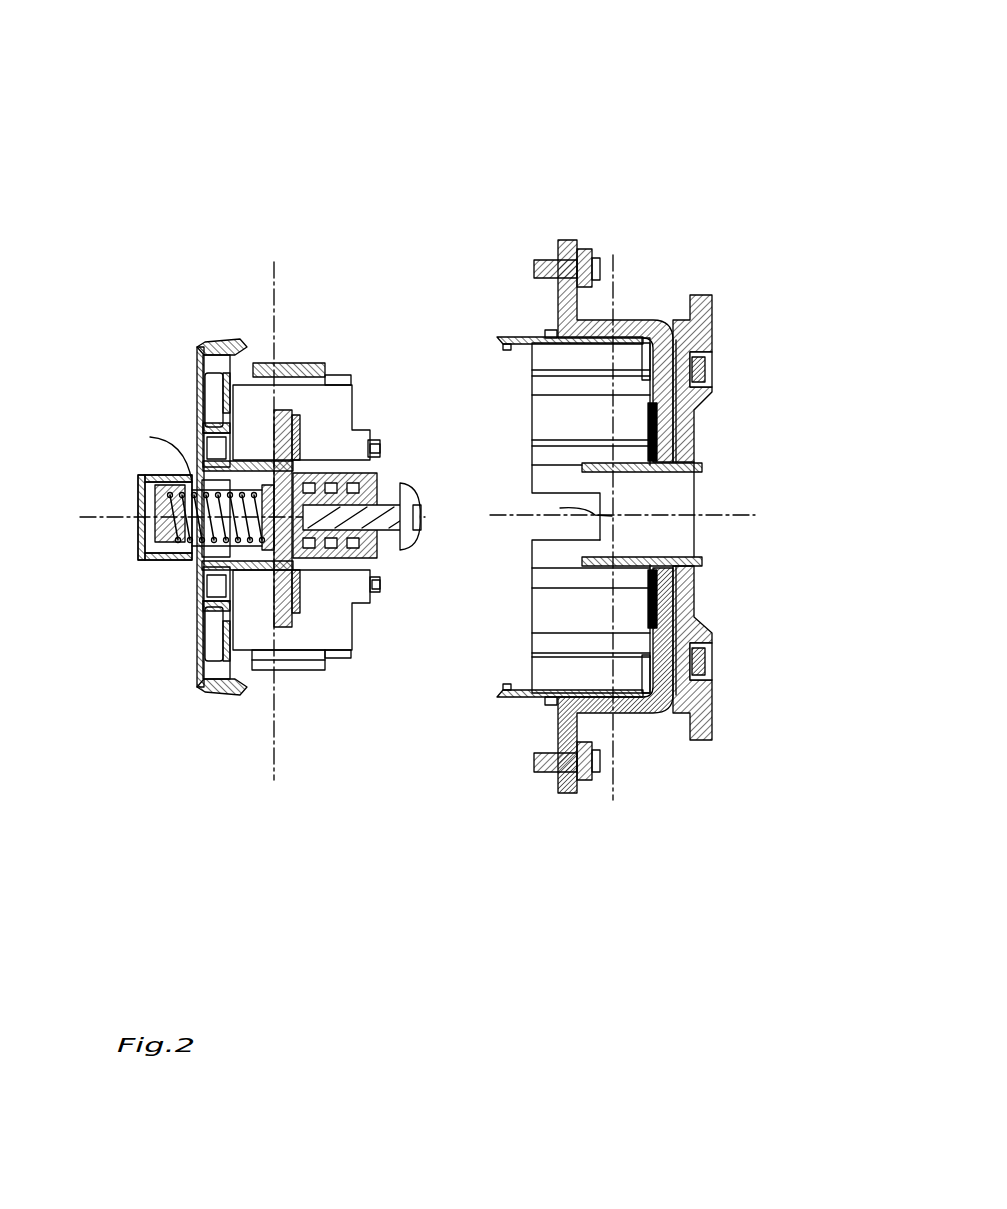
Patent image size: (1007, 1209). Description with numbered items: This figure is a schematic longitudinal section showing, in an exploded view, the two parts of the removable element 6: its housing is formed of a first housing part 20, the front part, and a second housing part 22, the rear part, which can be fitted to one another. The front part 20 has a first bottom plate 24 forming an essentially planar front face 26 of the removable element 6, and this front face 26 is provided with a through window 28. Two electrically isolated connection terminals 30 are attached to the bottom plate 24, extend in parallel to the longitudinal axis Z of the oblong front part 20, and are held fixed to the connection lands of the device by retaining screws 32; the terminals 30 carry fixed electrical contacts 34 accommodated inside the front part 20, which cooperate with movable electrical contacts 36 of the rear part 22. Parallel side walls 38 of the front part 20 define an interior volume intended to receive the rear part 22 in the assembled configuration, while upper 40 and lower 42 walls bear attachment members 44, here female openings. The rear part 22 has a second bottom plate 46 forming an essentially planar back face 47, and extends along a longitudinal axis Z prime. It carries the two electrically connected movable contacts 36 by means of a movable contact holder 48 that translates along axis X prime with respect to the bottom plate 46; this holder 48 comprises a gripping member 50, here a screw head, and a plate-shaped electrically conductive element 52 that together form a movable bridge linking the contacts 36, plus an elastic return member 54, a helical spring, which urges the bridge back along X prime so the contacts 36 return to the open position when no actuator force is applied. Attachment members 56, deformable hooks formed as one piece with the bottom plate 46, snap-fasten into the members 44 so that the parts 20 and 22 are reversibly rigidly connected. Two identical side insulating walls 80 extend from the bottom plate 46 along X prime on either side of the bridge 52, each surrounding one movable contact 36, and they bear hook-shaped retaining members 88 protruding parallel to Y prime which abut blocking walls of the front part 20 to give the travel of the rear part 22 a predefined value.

The removable element 6 is at (377, 31).
The first housing part 20 is at (480, 185).
The second housing part 22 is at (197, 226).
The first bottom plate 24 is at (714, 398).
The front face 26 is at (733, 417).
The through window 28 is at (708, 538).
The connection terminals 30 is at (628, 314).
The retaining screws 32 is at (543, 258).
The fixed electrical contacts 34 is at (703, 480).
The movable electrical contacts 36 is at (300, 430).
The side walls 38 is at (550, 625).
The upper wall 40 is at (522, 338).
The lower wall 42 is at (540, 705).
The attachment members 44 is at (530, 336).
The second bottom plate 46 is at (215, 620).
The back face 47 is at (125, 540).
The movable contact holder 48 is at (340, 455).
The gripping member 50 is at (412, 530).
The electrically conductive element 52 is at (200, 400).
The elastic return member 54 is at (185, 490).
The attachment members 56 is at (228, 340).
The side insulating walls 80 is at (335, 395).
The retaining members 88 is at (382, 448).